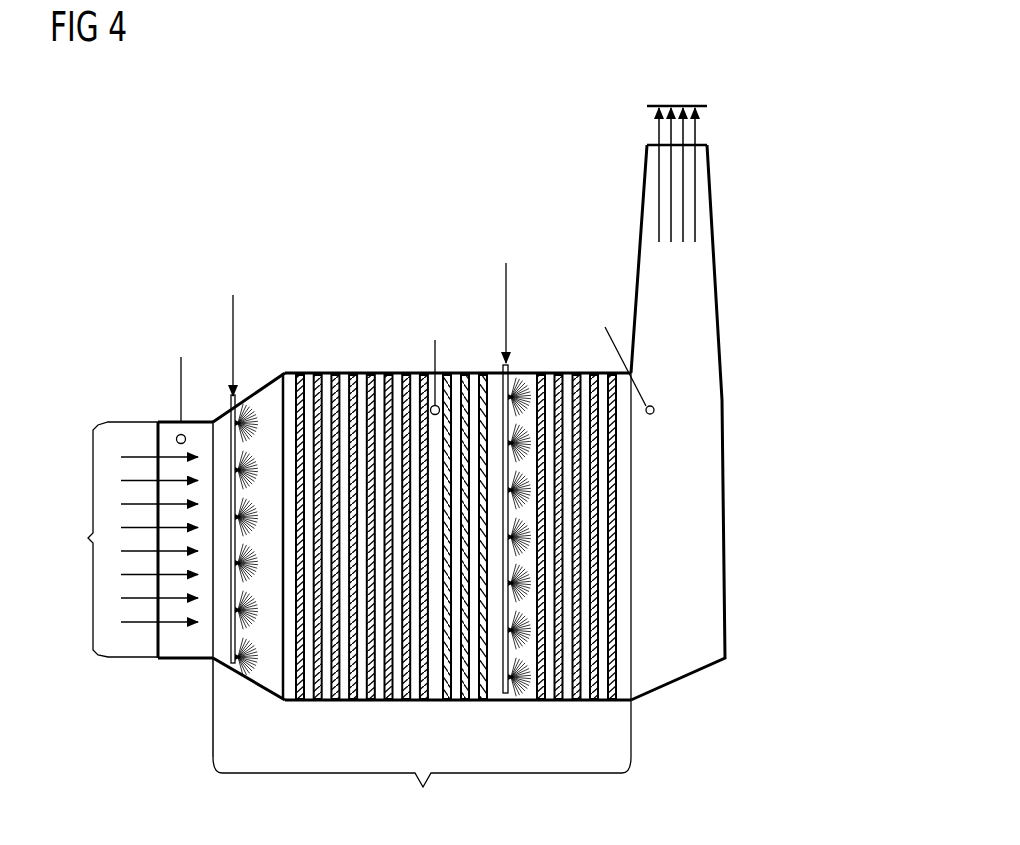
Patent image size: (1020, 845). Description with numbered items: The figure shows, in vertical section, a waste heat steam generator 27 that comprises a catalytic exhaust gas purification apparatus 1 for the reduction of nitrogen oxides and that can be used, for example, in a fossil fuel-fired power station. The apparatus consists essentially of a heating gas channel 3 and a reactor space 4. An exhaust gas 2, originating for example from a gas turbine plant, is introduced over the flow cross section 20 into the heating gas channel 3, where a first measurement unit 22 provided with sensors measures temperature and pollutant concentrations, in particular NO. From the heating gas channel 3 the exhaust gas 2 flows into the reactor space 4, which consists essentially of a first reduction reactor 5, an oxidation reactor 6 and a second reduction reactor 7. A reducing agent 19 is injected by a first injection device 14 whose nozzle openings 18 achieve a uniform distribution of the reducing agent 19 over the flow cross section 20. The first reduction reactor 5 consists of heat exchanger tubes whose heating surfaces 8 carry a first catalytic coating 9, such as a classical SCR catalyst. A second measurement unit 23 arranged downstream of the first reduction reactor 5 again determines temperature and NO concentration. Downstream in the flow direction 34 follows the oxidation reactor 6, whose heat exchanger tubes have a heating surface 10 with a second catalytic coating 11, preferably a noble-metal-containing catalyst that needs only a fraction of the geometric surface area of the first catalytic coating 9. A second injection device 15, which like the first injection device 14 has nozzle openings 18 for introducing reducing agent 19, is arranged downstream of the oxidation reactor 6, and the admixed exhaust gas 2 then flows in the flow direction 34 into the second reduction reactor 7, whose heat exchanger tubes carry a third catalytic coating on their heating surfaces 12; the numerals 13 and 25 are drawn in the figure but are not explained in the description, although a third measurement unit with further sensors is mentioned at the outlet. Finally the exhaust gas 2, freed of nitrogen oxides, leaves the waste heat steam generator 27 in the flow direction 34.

The catalytic exhaust gas purification apparatus 1 is at (445, 224).
The exhaust gas 2 is at (140, 598).
The heating gas channel 3 is at (192, 662).
The reactor space 4 is at (422, 790).
The first reduction reactor 5 is at (362, 366).
The oxidation reactor 6 is at (465, 366).
The second reduction reactor 7 is at (583, 366).
The heating surfaces 8 is at (355, 688).
The first catalytic coating 9 is at (348, 692).
The heating surface 10 is at (466, 688).
The second catalytic coating 11 is at (460, 692).
The heating surfaces 12 is at (594, 688).
The flow channel of third catalyst 13 is at (589, 692).
The first injection device 14 is at (221, 440).
The second injection device 15 is at (502, 413).
The nozzle openings 18 is at (260, 460).
The reducing agent 19 is at (232, 311).
The flow cross section 20 is at (104, 539).
The first measurement unit 22 is at (181, 368).
The second measurement unit 23 is at (435, 345).
The third sensor 25 is at (618, 340).
The waste heat steam generator 27 is at (155, 164).
The flow direction 34 is at (139, 456).